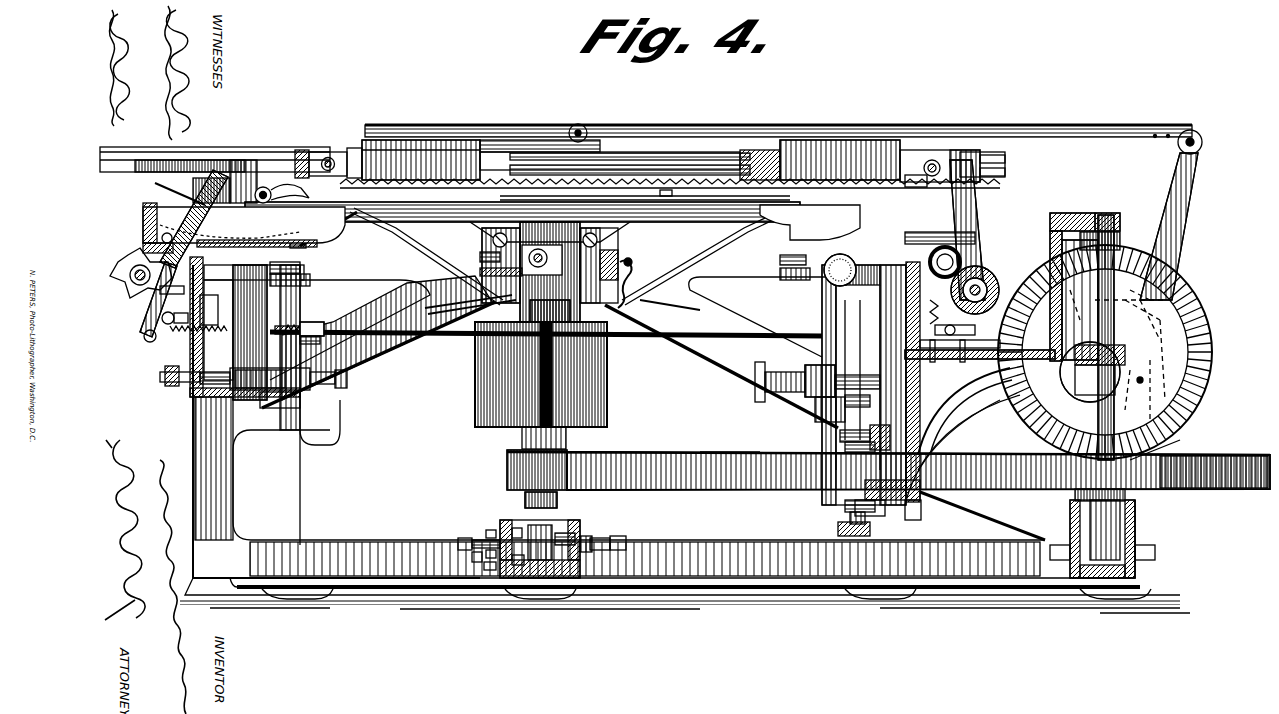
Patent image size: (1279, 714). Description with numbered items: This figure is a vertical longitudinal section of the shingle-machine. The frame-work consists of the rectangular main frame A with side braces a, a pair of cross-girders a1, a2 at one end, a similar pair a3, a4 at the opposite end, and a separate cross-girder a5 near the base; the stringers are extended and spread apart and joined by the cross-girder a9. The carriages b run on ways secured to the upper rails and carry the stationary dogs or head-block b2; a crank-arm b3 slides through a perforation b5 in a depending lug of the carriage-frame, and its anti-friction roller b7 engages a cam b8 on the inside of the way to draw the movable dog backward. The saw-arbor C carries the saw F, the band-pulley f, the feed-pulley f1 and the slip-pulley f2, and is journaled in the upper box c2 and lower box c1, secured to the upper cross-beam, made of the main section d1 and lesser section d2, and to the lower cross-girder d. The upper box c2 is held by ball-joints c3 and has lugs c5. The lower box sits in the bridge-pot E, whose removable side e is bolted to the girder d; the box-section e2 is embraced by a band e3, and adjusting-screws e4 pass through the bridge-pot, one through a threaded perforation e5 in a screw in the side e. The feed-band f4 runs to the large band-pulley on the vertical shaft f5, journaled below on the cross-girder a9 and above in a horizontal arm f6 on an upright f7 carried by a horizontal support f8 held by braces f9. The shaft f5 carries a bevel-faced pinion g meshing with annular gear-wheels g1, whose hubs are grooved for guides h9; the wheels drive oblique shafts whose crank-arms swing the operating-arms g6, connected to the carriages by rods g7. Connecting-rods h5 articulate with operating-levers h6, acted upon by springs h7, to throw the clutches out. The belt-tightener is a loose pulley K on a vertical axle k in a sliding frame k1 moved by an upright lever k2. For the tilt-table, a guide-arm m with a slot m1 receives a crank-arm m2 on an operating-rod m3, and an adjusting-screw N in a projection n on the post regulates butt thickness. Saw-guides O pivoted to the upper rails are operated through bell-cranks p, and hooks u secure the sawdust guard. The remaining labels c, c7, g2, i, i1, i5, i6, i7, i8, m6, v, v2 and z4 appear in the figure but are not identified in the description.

The main frame A is at (664, 395).
The side brace a is at (1196, 490).
The cross beam or girder a1 is at (262, 278).
The cross beam or girder a2 is at (238, 370).
The cross beam or girder a3 is at (905, 298).
The cross beam or girder a4 is at (1005, 496).
The cross-girder a5 is at (870, 530).
The cross-girder a9 is at (1094, 600).
The carriage b is at (520, 152).
The head-block or stationary dogs b2 is at (410, 150).
The crank-arm b3 is at (352, 148).
The perforation b5 is at (932, 160).
The anti-friction roller b7 is at (324, 152).
The cam b8 is at (250, 172).
The saw-arbor C is at (565, 316).
The spindle c is at (550, 272).
The lower box c1 is at (480, 257).
The upper box c2 is at (630, 258).
The ball-joint c3 is at (542, 259).
The lug c5 is at (518, 562).
The adjusting screw c7 is at (480, 272).
The lower cross-girder d is at (588, 536).
The upper cross-beam main section d1 is at (598, 246).
The upper cross-beam lesser section d2 is at (491, 265).
The bridge-pot E is at (560, 568).
The removable side of bridge-pot e is at (487, 525).
The box-section e2 is at (518, 525).
The band e3 is at (484, 541).
The adjusting-screw e4 is at (612, 542).
The threaded perforation e5 is at (482, 568).
The saw F is at (574, 202).
The band-pulley f is at (541, 374).
The feed-pulley f1 is at (558, 500).
The slip-pulley f2 is at (508, 480).
The feed-band f4 is at (730, 439).
The vertical shaft f5 is at (1098, 405).
The horizontal arm f6 is at (1085, 211).
The upright f7 is at (1065, 296).
The horizontal support f8 is at (980, 397).
The brace f9 is at (962, 446).
The bevel-faced pinion g is at (1122, 246).
The annular gear-wheel g1 is at (1214, 328).
The gear rim g2 is at (1208, 388).
The operating-arm g6 is at (1182, 222).
The rod g7 is at (783, 129).
The connecting-rod h5 is at (420, 338).
The operating-lever h6 is at (312, 324).
The spring h7 is at (300, 324).
The guide h9 is at (1145, 385).
The clamp plate i is at (532, 265).
The roller i1 is at (918, 271).
The pivot pin i5 is at (985, 256).
The ratchet wheel i6 is at (141, 273).
The lever i7 is at (967, 230).
The lever link i8 is at (968, 178).
The loose pulley K is at (817, 403).
The vertical axle k is at (875, 447).
The sliding frame k1 is at (846, 505).
The upright lever k2 is at (860, 437).
The guide-arm m is at (561, 304).
The slot m1 is at (148, 341).
The crank-arm m2 is at (146, 320).
The operating-rod m3 is at (194, 321).
The ratchet disk m6 is at (968, 307).
The adjusting-screw N is at (540, 283).
The projection n is at (538, 257).
The saw-guide or stealer O is at (645, 188).
The bell-crank p is at (570, 256).
The hook u is at (387, 338).
The clamp lever v is at (143, 210).
The clamp block v2 is at (143, 238).
The adjusting nut z4 is at (474, 534).